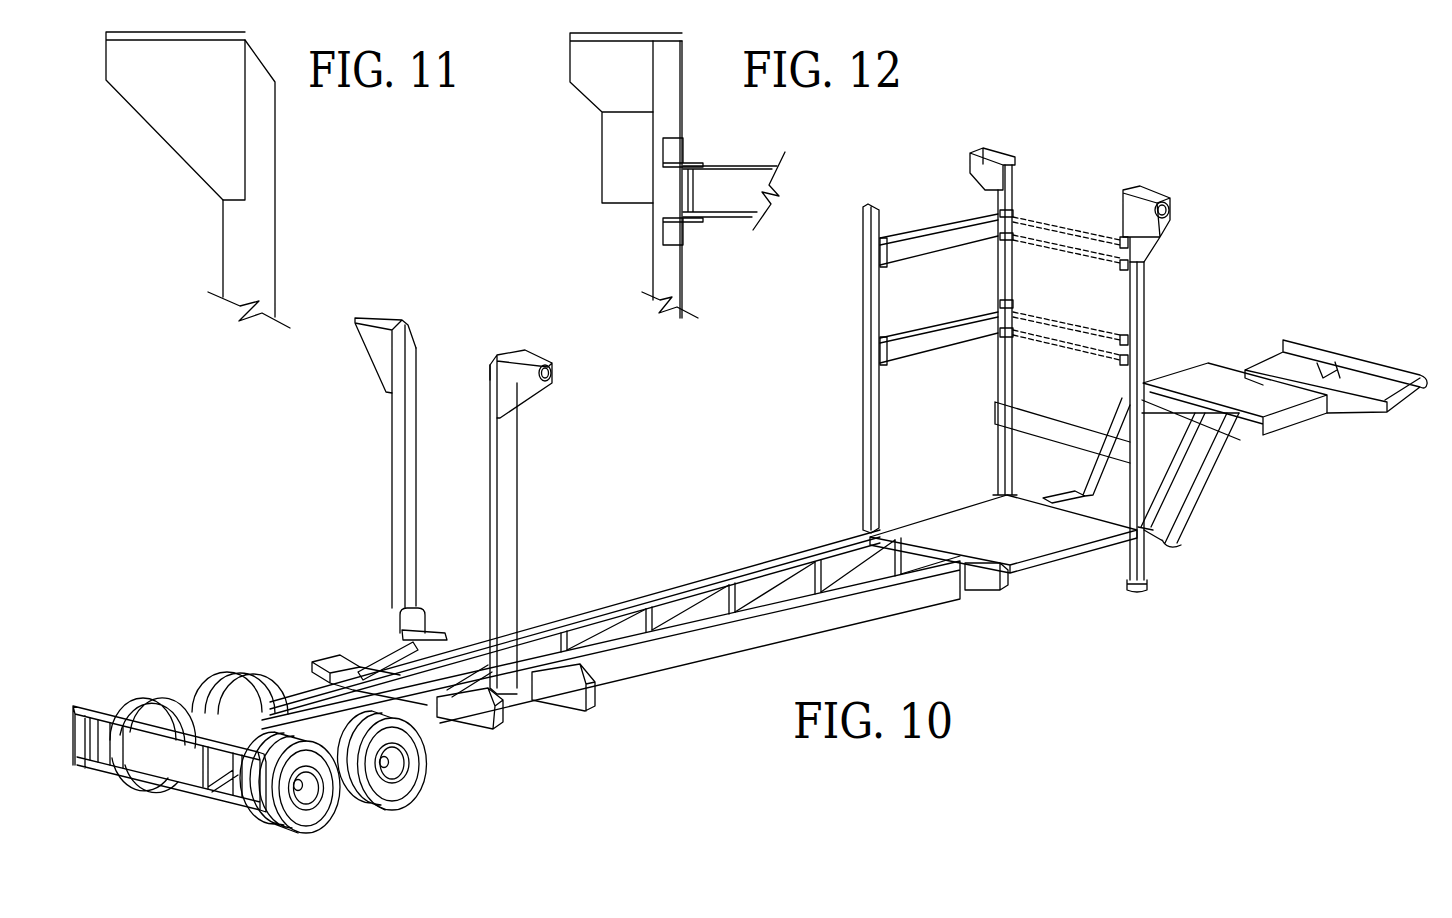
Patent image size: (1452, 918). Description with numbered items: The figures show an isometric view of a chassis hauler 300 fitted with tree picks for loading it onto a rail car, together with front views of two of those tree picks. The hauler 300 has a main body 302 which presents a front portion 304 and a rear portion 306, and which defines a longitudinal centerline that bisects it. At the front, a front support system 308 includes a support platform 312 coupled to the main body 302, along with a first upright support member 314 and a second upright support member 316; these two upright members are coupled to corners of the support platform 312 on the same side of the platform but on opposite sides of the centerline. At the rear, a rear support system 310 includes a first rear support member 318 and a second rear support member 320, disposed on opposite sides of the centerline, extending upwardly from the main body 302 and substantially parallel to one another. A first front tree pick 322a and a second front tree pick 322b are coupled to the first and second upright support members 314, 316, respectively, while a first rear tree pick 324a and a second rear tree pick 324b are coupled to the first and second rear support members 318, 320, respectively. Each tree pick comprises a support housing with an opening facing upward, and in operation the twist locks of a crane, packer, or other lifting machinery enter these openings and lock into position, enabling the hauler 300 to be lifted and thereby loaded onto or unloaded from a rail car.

In FIG. 10, the hauler 300 is at (1258, 100).
In FIG. 10, the main body 302 is at (790, 628).
In FIG. 10, the front portion 304 is at (1103, 607).
In FIG. 10, the rear portion 306 is at (560, 745).
In FIG. 10, the front support system 308 is at (1160, 160).
In FIG. 10, the rear support system 310 is at (545, 325).
In FIG. 10, the support platform 312 is at (965, 513).
In FIG. 12, the first upright support member 314 is at (673, 97).
In FIG. 10, the first upright support member 314 is at (1013, 197).
In FIG. 10, the second upright support member 316 is at (1144, 300).
In FIG. 11, the first rear support member 318 is at (265, 119).
In FIG. 10, the first rear support member 318 is at (392, 436).
In FIG. 10, the second rear support member 320 is at (498, 459).
In FIG. 12, the first front tree pick 322a is at (610, 98).
In FIG. 10, the first front tree pick 322a is at (997, 150).
In FIG. 10, the second front tree pick 322b is at (1135, 186).
In FIG. 11, the first rear tree pick 324a is at (168, 120).
In FIG. 10, the first rear tree pick 324a is at (383, 318).
In FIG. 10, the second rear tree pick 324b is at (525, 350).